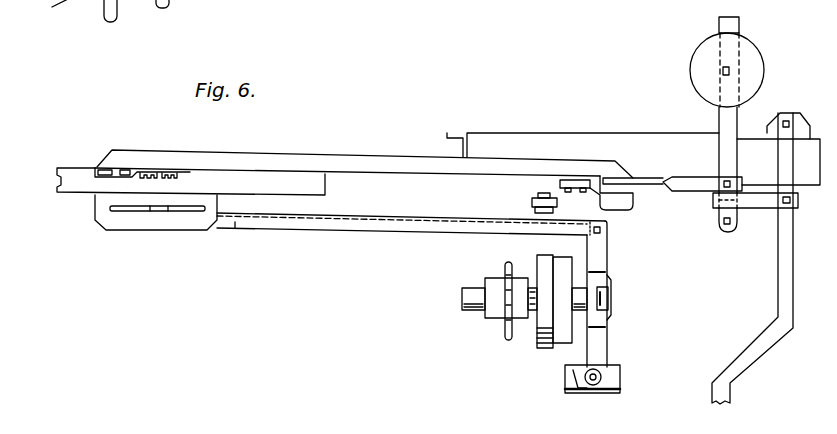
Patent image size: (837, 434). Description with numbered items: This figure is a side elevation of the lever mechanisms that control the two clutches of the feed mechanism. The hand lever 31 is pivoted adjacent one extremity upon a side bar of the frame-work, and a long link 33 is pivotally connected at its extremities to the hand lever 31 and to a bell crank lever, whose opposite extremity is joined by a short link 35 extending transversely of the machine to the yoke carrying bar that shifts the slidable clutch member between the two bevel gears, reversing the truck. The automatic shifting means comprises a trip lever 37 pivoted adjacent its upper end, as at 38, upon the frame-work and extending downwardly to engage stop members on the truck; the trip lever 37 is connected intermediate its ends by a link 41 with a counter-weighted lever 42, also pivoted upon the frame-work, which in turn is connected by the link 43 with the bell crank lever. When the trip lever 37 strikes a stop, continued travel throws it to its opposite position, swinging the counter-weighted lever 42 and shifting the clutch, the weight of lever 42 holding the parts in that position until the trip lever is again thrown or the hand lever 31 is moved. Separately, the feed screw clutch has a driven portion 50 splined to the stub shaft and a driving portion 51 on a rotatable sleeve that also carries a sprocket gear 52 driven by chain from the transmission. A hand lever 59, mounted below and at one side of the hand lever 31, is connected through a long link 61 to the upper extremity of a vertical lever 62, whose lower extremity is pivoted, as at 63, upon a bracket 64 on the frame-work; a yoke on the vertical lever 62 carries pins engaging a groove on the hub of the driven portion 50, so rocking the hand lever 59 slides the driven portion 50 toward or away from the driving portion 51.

The hand lever 31 is at (98, 167).
The long link 33 is at (374, 158).
The short link 35 is at (532, 200).
The trip lever 37 is at (778, 295).
The pivot of trip lever 38 is at (787, 120).
The link 41 is at (755, 208).
The counter-weighted lever 42 is at (737, 121).
The link 43 is at (681, 177).
The driven portion of clutch 50 is at (573, 266).
The driving portion of clutch 51 is at (499, 278).
The sprocket gear 52 is at (503, 267).
The hand lever 59 is at (165, 212).
The long link 61 is at (413, 227).
The vertical lever 62 is at (607, 254).
The pivot of vertical lever 63 is at (607, 360).
The bracket 64 is at (602, 382).